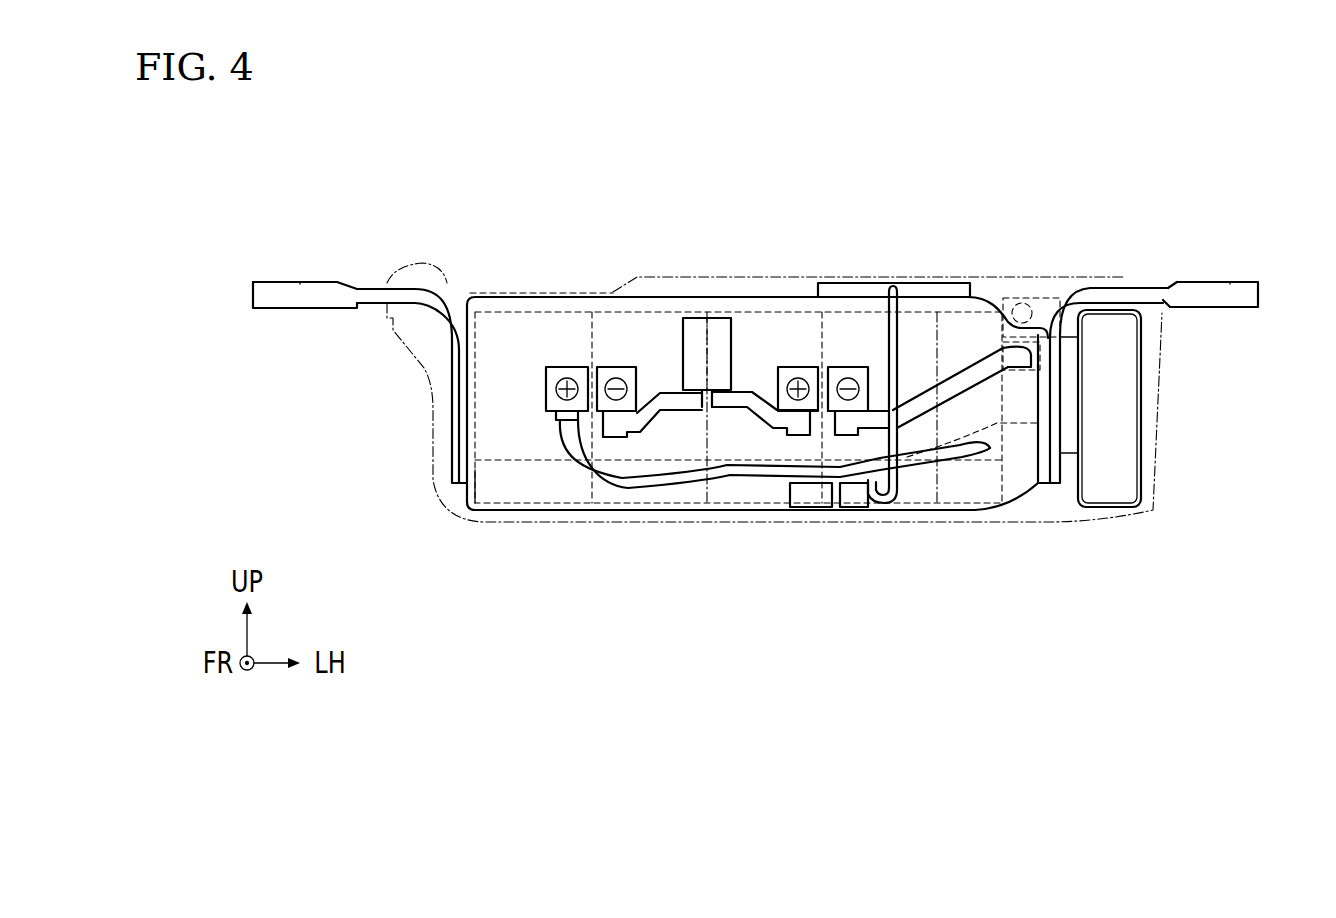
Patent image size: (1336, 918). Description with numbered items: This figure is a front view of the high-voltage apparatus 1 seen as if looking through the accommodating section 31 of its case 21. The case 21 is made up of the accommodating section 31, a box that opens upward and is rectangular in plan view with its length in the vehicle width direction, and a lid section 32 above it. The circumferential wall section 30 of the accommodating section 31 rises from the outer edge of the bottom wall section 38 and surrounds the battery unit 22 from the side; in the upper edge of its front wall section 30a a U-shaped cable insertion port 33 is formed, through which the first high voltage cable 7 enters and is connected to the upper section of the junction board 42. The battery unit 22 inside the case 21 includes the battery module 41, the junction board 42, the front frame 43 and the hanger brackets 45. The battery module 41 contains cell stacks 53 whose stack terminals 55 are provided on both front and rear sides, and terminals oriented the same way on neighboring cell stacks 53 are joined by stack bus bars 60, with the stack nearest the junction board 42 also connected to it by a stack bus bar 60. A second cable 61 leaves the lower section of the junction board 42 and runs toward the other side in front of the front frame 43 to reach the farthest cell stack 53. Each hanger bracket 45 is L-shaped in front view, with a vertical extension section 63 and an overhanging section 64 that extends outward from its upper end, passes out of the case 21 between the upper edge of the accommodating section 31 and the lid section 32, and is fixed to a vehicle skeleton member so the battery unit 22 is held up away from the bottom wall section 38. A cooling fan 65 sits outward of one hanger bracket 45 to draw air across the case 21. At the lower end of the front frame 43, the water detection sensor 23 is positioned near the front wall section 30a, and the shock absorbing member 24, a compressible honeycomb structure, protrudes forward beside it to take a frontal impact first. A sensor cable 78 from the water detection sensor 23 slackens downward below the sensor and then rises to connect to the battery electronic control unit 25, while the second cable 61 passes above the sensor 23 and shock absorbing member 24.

The high-voltage apparatus 1 is at (1143, 158).
The first high voltage cable 7 is at (1018, 304).
The case 21 is at (343, 373).
The battery unit 22 is at (683, 518).
The water detection sensor 23 is at (854, 500).
The shock absorbing member 24 is at (808, 500).
The battery electronic control unit 25 is at (860, 283).
The circumferential wall section 30 is at (696, 393).
The front wall section 30a is at (516, 490).
The accommodating section 31 is at (433, 406).
The lid section 32 is at (425, 266).
The cable insertion port 33 is at (1047, 310).
The bottom wall section 38 is at (930, 523).
The battery module 41 is at (548, 516).
The junction board 42 is at (990, 400).
The front frame 43 is at (467, 468).
The hanger brackets 45 is at (300, 284).
The cell stacks 53 is at (617, 307).
The stack terminals 55 is at (613, 414).
The stack bus bars 60 is at (652, 398).
The second cable 61 is at (750, 480).
The vertical extension sections 63 is at (452, 442).
The overhanging sections 64 is at (262, 297).
The cooling fan 65 is at (1142, 393).
The sensor cable 78 is at (887, 504).